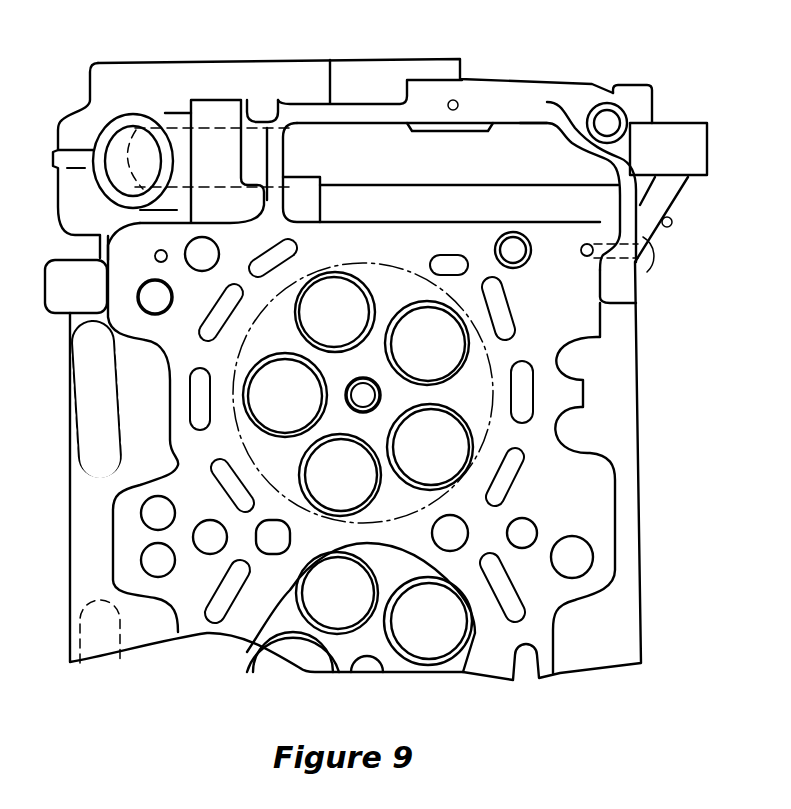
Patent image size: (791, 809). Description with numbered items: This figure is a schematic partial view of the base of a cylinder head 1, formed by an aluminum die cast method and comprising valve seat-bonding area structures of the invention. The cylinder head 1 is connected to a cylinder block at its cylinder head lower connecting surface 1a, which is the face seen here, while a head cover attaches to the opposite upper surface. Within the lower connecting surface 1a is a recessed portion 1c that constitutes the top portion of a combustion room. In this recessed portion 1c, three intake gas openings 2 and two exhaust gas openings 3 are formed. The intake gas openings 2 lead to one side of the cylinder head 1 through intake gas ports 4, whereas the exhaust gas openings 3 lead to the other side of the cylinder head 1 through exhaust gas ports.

The cylinder head 1 is at (684, 88).
The cylinder head lower connecting surface 1a is at (592, 483).
The recessed portion 1c is at (396, 290).
The intake gas openings 2 is at (298, 318).
The exhaust gas openings 3 is at (440, 408).
The intake gas ports 4 is at (78, 408).